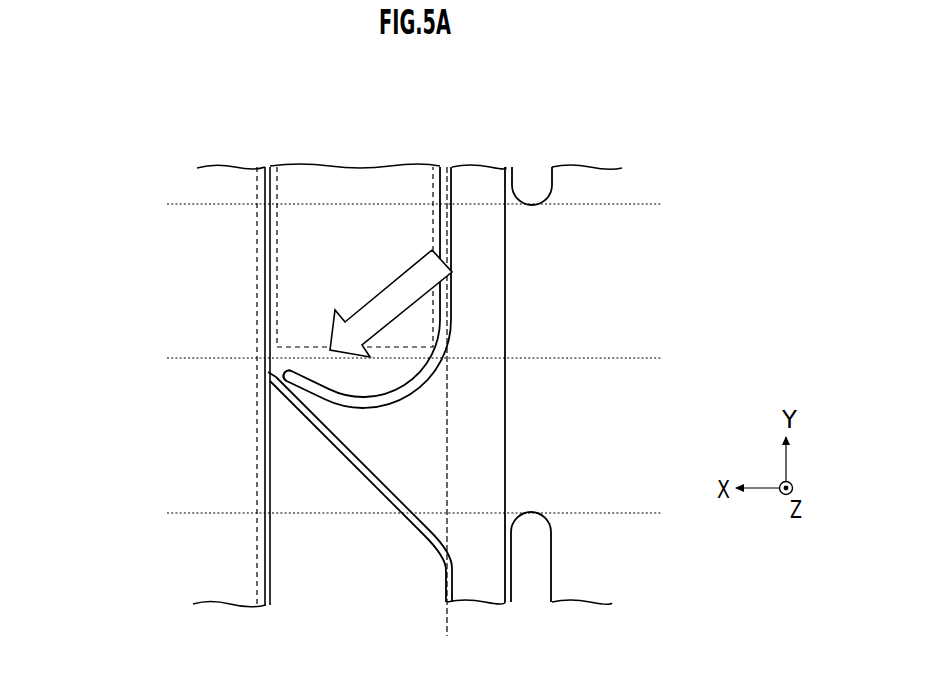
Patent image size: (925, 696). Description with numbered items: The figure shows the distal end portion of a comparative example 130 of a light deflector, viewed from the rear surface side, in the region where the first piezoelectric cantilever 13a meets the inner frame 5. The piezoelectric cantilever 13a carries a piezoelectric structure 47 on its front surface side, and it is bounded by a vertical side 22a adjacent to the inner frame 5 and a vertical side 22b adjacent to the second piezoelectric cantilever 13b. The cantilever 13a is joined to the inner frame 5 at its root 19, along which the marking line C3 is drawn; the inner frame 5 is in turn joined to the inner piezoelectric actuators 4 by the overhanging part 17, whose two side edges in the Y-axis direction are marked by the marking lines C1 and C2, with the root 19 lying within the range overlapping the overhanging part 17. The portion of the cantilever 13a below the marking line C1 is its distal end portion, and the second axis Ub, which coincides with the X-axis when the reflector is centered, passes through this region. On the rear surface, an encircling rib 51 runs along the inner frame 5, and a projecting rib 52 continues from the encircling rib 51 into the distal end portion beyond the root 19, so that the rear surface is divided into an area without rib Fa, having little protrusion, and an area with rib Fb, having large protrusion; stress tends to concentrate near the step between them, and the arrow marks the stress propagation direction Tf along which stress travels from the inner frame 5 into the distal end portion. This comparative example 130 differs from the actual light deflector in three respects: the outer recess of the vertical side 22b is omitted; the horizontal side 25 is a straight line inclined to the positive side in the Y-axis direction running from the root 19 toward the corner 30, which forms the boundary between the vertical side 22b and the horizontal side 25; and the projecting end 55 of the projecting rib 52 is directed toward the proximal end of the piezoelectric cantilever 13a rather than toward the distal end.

The comparative example 130 is at (166, 90).
The piezoelectric cantilever 13b is at (210, 153).
The piezoelectric cantilever 13a is at (333, 159).
The piezoelectric structure 47 is at (265, 167).
The vertical side 22b is at (273, 205).
The vertical side 22a is at (443, 163).
The inner frame 5 is at (482, 156).
The encircling rib 51 is at (495, 182).
The inner piezoelectric actuators 4 is at (608, 155).
The overhanging part 17 is at (523, 237).
The root 19 is at (447, 465).
The projecting end 55 is at (268, 374).
The corner 30 is at (268, 386).
The projecting rib 52 is at (357, 442).
The horizontal side 25 is at (385, 492).
The marking line C1 is at (178, 203).
The marking line C2 is at (178, 512).
The marking line C3 is at (448, 413).
The second axis Ub is at (643, 357).
The stress propagation direction Tf is at (382, 292).
The area without rib Fa is at (312, 302).
The area with rib Fb is at (375, 450).